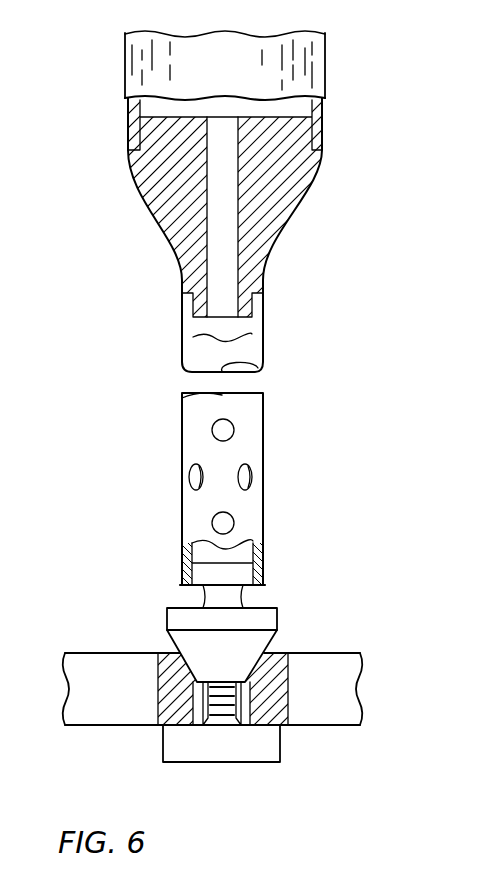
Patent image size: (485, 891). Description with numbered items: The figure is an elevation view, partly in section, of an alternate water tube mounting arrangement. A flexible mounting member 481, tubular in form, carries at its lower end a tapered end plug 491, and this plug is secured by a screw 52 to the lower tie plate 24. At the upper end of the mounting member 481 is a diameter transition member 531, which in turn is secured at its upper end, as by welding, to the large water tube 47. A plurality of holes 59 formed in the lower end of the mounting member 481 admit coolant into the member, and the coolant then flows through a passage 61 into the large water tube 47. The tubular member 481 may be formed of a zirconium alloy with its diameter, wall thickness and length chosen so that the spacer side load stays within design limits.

The large water tube 47 is at (325, 80).
The diameter transition member 531 is at (290, 228).
The passage 61 is at (222, 247).
The holes 59 is at (218, 432).
The flexible mounting member 481 is at (265, 498).
The tapered end plug 491 is at (280, 622).
The lower tie plate 24 is at (362, 690).
The screw 52 is at (207, 762).